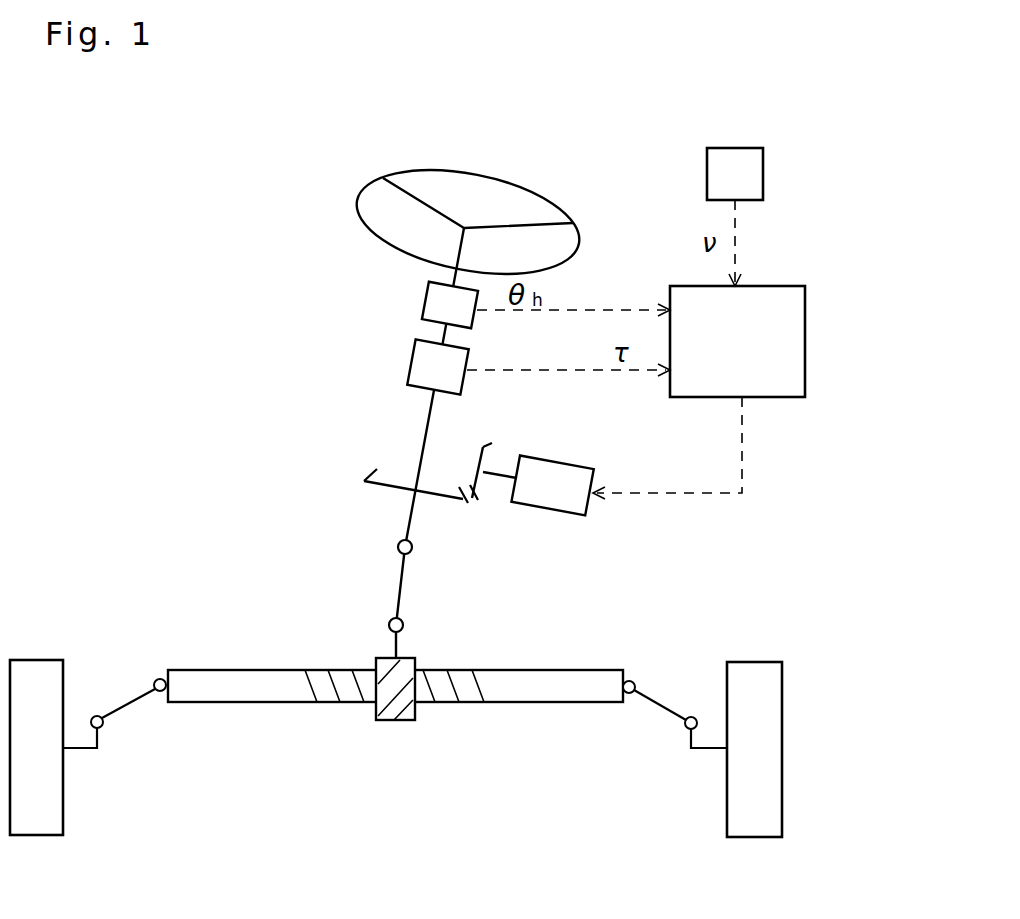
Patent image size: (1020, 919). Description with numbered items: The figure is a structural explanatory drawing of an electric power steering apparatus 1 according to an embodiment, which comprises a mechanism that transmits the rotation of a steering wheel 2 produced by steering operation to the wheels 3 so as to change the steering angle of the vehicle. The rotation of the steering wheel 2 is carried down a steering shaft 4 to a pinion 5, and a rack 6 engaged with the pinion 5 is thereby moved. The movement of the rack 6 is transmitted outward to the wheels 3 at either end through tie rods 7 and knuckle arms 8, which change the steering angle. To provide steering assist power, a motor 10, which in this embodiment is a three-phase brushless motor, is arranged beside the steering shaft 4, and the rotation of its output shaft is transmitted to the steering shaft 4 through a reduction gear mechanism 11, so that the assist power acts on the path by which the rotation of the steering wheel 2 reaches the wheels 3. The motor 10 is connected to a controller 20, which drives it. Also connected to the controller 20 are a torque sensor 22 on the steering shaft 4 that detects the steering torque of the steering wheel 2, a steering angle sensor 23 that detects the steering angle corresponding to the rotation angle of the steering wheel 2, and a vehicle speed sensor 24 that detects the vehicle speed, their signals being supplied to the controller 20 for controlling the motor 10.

The electric power steering apparatus 1 is at (485, 163).
The steering wheel 2 is at (357, 206).
The wheels 3 is at (37, 820).
The steering shaft 4 is at (425, 443).
The pinion 5 is at (390, 708).
The rack 6 is at (325, 694).
The tie rods 7 is at (130, 706).
The knuckle arms 8 is at (80, 750).
The motor 10 is at (550, 472).
The reduction gear mechanism 11 is at (442, 502).
The controller 20 is at (780, 310).
The torque sensor 22 is at (418, 366).
The steering angle sensor 23 is at (432, 304).
The vehicle speed sensor 24 is at (730, 158).